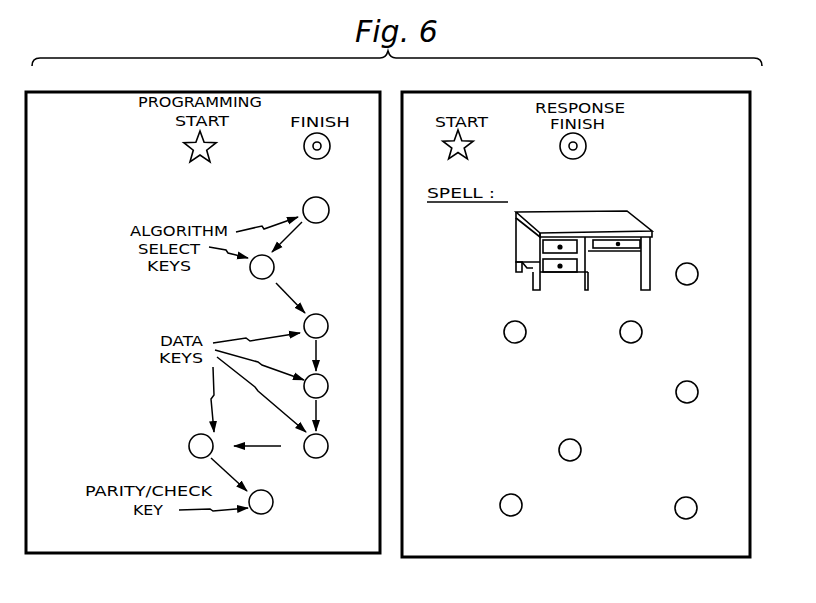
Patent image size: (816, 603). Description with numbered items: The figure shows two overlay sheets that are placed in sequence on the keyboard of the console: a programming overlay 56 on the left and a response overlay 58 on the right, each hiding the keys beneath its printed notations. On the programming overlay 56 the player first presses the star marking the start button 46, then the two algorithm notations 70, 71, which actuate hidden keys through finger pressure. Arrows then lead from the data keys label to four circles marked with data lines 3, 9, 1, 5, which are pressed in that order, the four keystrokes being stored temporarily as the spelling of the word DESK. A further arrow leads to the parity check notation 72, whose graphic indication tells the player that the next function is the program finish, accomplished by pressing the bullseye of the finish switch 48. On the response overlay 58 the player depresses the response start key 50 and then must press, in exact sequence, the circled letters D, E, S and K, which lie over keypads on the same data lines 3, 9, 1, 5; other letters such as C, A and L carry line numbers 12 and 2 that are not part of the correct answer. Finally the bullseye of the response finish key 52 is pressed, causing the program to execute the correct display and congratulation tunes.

The start button 46 is at (214, 150).
The finish switch 48 is at (328, 153).
The response start key 50 is at (470, 149).
The response finish key 52 is at (586, 147).
The programming overlay 56 is at (160, 540).
The response overlay 58 is at (483, 548).
The algorithm notation 70 is at (328, 216).
The algorithm notation 71 is at (274, 270).
The parity check notation 72 is at (273, 507).
The data line 3 is at (328, 330).
The data line 9 is at (328, 390).
The data line 1 is at (328, 449).
The data line 5 is at (194, 440).
The key position 12 is at (697, 280).
The key position 2 is at (695, 501).